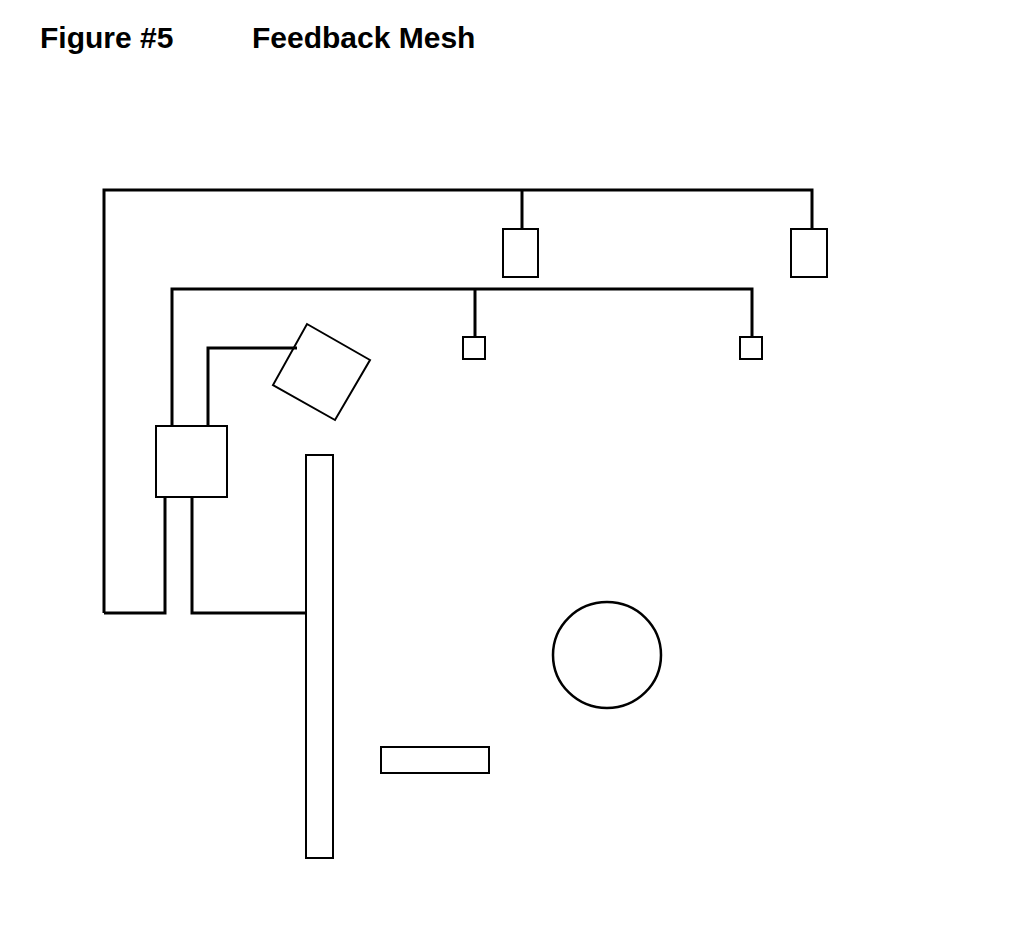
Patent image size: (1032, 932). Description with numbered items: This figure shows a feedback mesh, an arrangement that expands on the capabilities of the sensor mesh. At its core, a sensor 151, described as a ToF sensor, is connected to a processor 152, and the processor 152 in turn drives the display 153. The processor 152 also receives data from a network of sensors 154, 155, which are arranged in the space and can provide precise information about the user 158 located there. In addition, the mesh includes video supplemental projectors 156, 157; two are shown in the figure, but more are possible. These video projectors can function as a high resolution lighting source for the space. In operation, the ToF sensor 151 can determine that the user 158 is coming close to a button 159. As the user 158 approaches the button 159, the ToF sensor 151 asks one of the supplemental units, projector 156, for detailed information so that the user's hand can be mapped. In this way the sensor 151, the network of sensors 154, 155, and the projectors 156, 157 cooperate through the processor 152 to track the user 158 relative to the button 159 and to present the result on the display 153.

The sensor 151 is at (321, 372).
The processor 152 is at (191, 461).
The display 153 is at (323, 818).
The sensor 154 is at (470, 348).
The sensor 155 is at (748, 349).
The video supplemental projector 156 is at (525, 247).
The video supplemental projector 157 is at (815, 247).
The user 158 is at (607, 655).
The button 159 is at (476, 758).